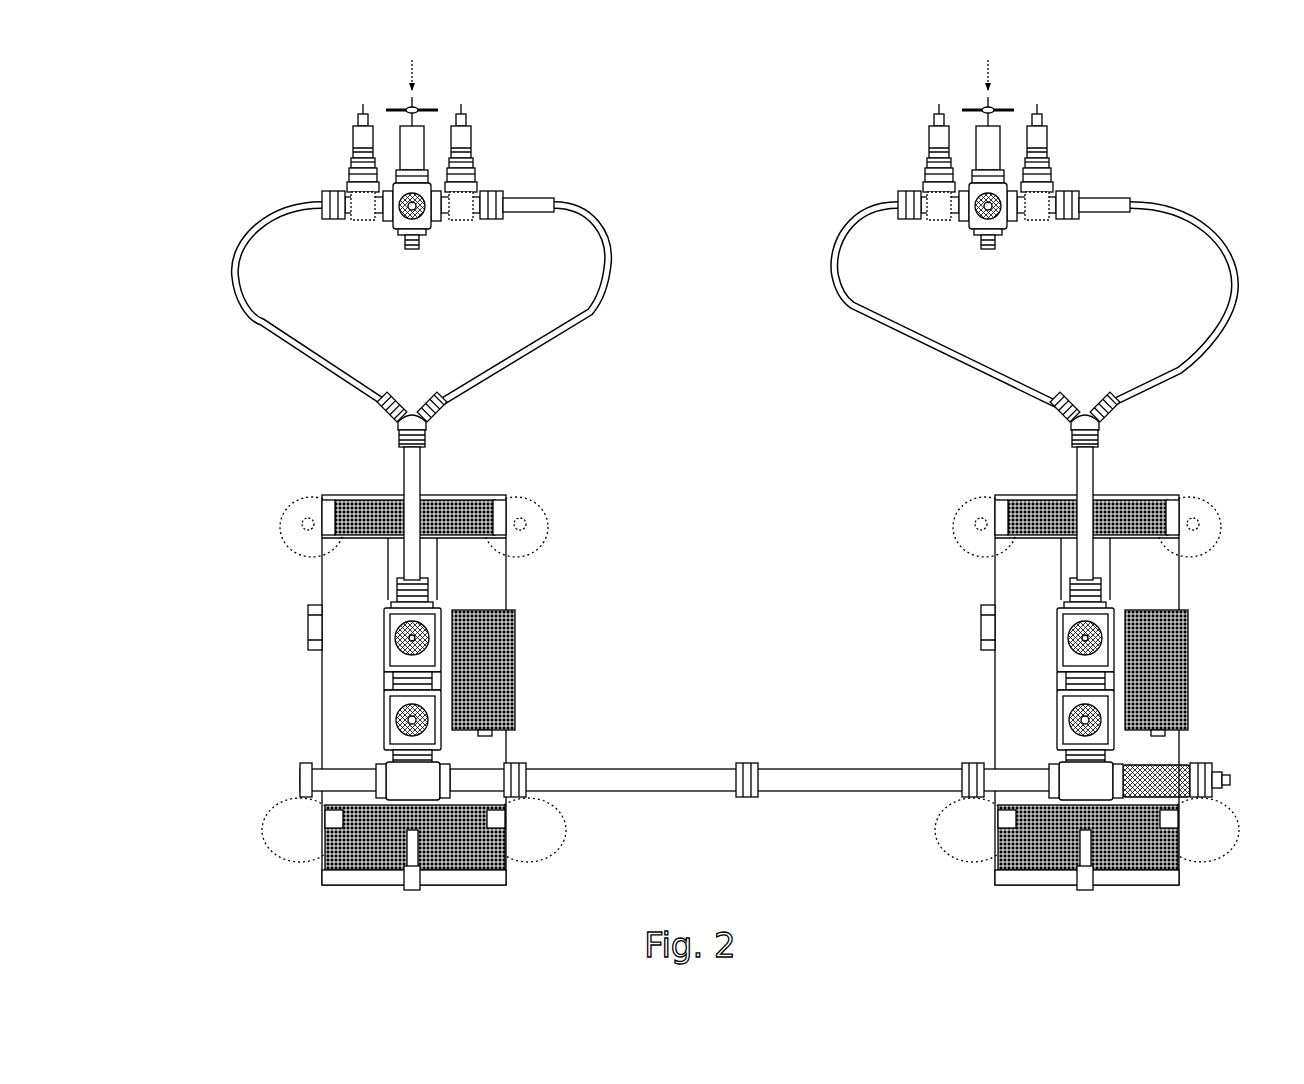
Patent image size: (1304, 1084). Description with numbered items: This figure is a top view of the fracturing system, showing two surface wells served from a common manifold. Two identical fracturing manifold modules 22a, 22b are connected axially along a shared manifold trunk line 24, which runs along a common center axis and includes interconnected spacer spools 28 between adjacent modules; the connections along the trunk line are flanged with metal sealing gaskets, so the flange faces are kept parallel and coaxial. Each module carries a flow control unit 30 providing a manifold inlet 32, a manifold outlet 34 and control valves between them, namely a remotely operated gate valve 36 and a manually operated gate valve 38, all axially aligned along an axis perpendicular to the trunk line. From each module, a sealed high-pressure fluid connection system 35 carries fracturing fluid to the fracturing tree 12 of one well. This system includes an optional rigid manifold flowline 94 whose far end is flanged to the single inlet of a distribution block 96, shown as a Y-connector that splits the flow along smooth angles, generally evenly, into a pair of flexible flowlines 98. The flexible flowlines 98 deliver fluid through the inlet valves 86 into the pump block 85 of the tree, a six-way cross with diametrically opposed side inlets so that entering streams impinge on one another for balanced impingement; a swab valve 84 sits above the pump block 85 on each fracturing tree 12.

The fracturing tree 12 is at (712, 158).
The fracturing manifold module 22a is at (268, 718).
The fracturing manifold module 22b is at (935, 718).
The shared manifold trunk line 24 is at (668, 795).
The spacer spool 28 is at (1180, 762).
The flow control unit 30 is at (749, 682).
The manifold inlet 32 is at (400, 758).
The manifold outlet 34 is at (430, 598).
The remotely operated gate valve 36 is at (388, 716).
The manually operated gate valve 38 is at (385, 640).
The fluid connection system 35 is at (716, 392).
The swab valve 84 is at (428, 232).
The pump block 85 is at (430, 213).
The inlet valve 86 is at (352, 182).
The manifold flowline 94 is at (420, 477).
The distribution block 96 is at (412, 400).
The flexible flowline 98 is at (238, 312).